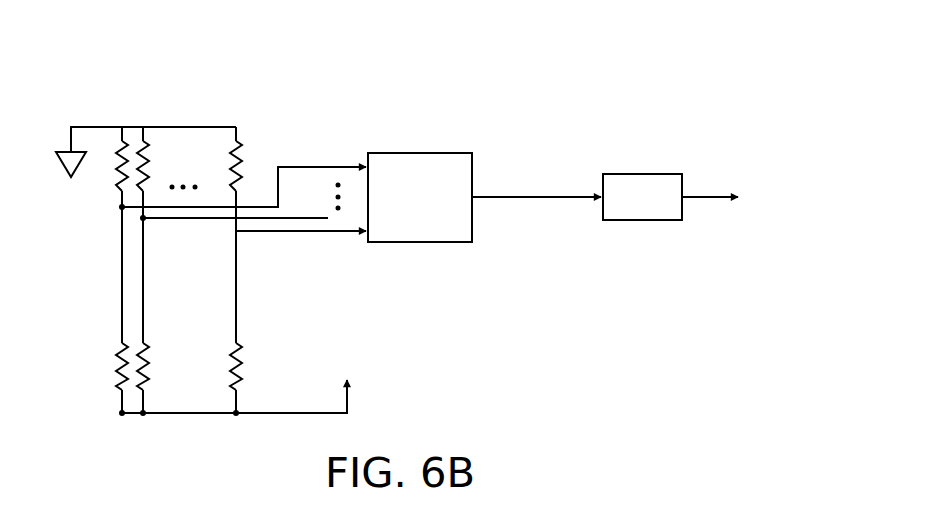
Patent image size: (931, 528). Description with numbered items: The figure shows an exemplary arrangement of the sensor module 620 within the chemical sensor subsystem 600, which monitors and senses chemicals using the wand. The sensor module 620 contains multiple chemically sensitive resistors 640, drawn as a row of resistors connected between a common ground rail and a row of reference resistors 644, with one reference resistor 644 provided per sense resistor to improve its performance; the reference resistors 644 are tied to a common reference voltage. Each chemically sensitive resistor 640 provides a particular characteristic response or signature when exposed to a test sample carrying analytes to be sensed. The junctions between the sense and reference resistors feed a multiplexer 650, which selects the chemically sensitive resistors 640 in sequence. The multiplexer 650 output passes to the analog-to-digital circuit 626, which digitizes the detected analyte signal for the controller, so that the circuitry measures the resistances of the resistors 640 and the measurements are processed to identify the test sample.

The chemical sensor subsystem 600 is at (556, 68).
The sensor module 620 is at (343, 78).
The chemically sensitive resistors 640 is at (108, 182).
The reference resistors 644 is at (110, 378).
The multiplexer 650 is at (447, 153).
The analog-to-digital (A/D) circuit 626 is at (637, 174).